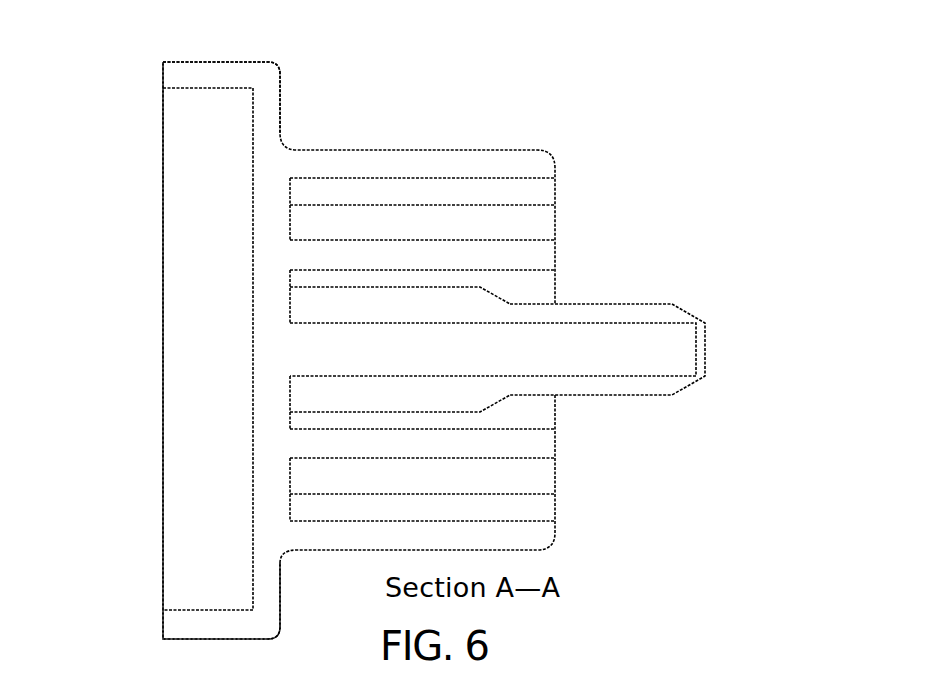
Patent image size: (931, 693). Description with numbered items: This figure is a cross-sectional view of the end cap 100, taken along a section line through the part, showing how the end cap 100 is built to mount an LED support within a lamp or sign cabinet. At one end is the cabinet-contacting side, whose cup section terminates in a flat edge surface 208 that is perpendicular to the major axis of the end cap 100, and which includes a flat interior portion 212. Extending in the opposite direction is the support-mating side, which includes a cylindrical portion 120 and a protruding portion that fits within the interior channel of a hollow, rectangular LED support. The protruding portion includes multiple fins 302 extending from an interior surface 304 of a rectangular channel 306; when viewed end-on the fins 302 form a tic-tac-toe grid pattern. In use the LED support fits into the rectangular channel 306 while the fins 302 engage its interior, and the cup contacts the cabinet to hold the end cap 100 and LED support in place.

The end cap 100 is at (690, 77).
The cylindrical portion 120 is at (430, 147).
The flat edge surface 208 is at (163, 78).
The flat interior portion 212 is at (248, 275).
The fins 302 is at (607, 313).
The interior surface 304 is at (297, 278).
The rectangular channel 306 is at (510, 415).